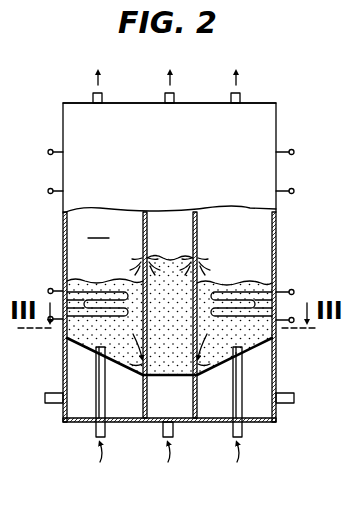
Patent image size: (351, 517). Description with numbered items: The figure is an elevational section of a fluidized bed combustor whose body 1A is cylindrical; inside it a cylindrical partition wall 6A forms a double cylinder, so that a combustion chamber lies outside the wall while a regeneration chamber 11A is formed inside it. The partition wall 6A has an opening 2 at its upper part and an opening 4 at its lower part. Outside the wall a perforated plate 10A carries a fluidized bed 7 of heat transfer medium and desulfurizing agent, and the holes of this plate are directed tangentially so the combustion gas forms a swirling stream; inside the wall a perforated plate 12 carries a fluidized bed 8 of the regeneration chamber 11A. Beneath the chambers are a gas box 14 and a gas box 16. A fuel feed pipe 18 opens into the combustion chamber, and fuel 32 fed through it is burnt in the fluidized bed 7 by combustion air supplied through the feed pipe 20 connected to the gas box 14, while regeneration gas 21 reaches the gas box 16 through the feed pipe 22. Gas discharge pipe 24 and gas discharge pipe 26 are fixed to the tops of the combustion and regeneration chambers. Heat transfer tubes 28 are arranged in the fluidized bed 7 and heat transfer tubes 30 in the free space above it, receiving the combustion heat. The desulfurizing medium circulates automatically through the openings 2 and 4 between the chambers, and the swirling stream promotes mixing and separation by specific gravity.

The body 1A is at (63, 120).
The opening 2 is at (143, 243).
The opening 4 is at (169, 341).
The cylindrical partition wall 6A is at (197, 226).
The fluidized bed 7 is at (103, 285).
The fluidized bed 8 is at (170, 263).
The perforated plate 10A is at (63, 340).
The regeneration chamber 11A is at (159, 222).
The perforated plate 12 is at (169, 377).
The gas box 14 is at (68, 369).
The gas box 16 is at (157, 409).
The fuel feed pipe 18 is at (95, 408).
The feed pipe 20 is at (55, 404).
The regeneration gas 21 is at (160, 466).
The feed pipe 22 is at (174, 430).
The gas discharge pipe 24 is at (93, 97).
The gas discharge pipe 26 is at (174, 97).
The heat transfer tube 28 is at (60, 290).
The heat transfer tube 30 is at (50, 150).
The fuel 32 is at (165, 466).